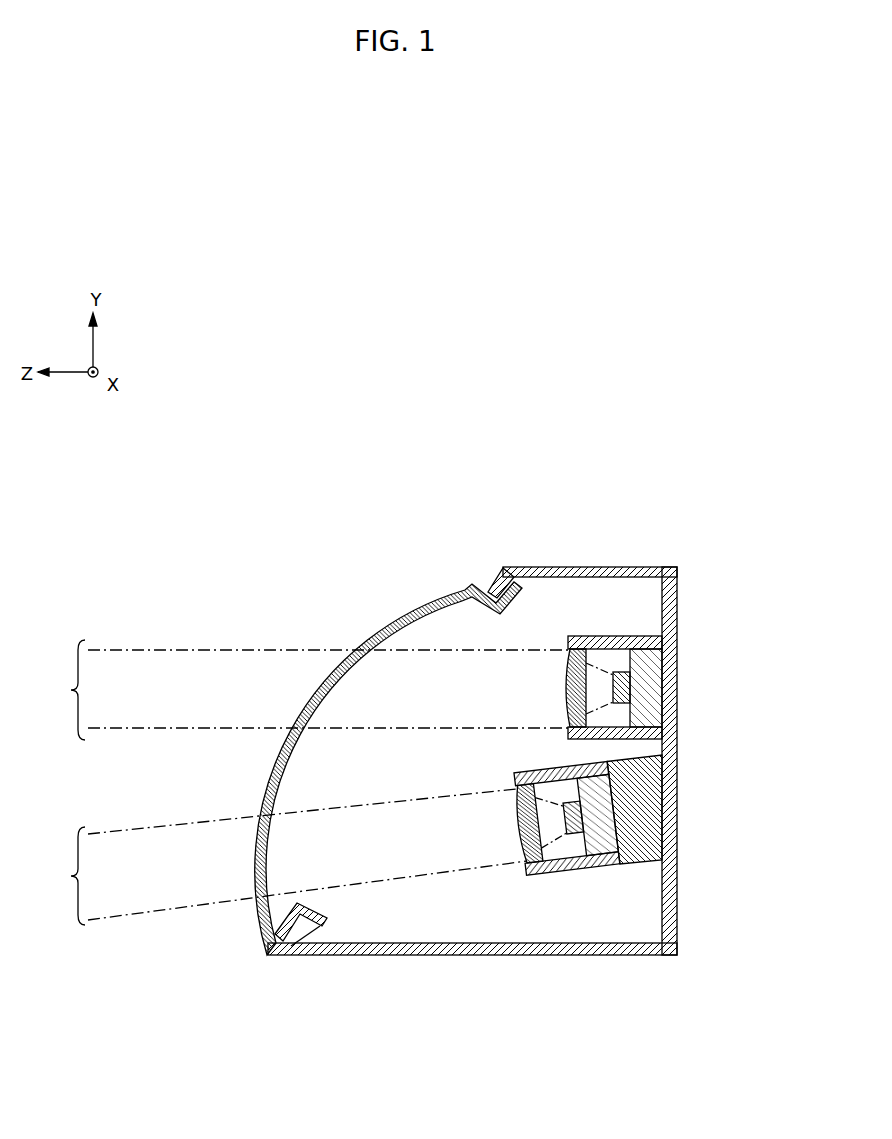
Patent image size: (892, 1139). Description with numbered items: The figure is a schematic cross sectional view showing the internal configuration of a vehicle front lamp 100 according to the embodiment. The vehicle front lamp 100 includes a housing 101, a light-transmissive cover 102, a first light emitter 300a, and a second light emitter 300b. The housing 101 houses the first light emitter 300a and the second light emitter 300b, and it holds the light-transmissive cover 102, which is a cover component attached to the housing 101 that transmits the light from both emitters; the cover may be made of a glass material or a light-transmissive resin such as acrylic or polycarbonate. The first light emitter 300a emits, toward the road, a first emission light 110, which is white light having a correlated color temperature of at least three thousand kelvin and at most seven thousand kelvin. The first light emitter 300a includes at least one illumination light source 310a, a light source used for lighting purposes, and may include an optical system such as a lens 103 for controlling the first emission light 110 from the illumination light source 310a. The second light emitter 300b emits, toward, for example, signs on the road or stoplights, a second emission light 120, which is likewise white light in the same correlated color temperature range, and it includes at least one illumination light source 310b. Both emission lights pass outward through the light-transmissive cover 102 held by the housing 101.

The vehicle front lamp 100 is at (393, 735).
The housing 101 is at (515, 567).
The light-transmissive cover 102 is at (430, 603).
The lens 103 is at (572, 672).
The first emission light 110 is at (273, 857).
The second emission light 120 is at (294, 690).
The first light emitter 300a is at (638, 837).
The second light emitter 300b is at (667, 656).
The illumination light source 310a is at (577, 820).
The illumination light source 310b is at (622, 690).